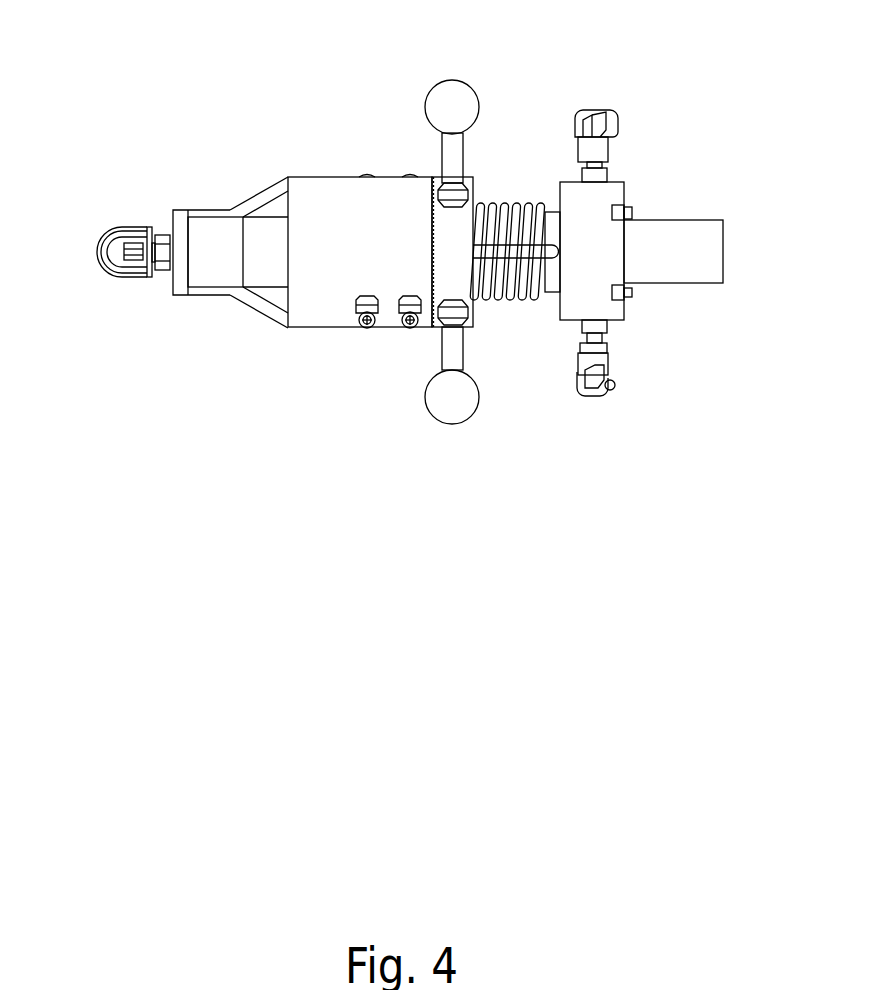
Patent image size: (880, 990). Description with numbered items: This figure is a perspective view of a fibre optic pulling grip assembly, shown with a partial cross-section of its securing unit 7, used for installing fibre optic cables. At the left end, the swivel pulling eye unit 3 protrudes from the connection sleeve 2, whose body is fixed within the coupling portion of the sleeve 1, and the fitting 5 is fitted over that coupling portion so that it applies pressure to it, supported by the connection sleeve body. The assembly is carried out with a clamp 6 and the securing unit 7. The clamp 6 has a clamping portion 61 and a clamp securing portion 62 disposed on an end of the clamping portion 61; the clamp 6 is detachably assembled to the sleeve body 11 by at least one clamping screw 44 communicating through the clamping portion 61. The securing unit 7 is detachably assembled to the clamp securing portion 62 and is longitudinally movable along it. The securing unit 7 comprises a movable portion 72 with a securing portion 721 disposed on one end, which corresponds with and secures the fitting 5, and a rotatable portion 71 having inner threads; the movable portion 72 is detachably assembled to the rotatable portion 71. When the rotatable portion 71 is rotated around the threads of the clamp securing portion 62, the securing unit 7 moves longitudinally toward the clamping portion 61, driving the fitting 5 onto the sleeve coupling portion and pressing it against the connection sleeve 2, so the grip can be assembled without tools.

The sleeve 1 is at (706, 217).
The sleeve body 11 is at (688, 242).
The connection sleeve 2 is at (180, 270).
The swivel pulling eye unit 3 is at (120, 228).
The fitting 5 is at (215, 240).
The clamp 6 is at (571, 394).
The clamping portion 61 is at (615, 310).
The clamp securing portion 62 is at (513, 298).
The securing unit 7 is at (383, 326).
The rotatable portion 71 is at (445, 287).
The movable portion 72 is at (325, 303).
The securing portion 721 is at (183, 218).
The clamping screw 44 is at (605, 117).